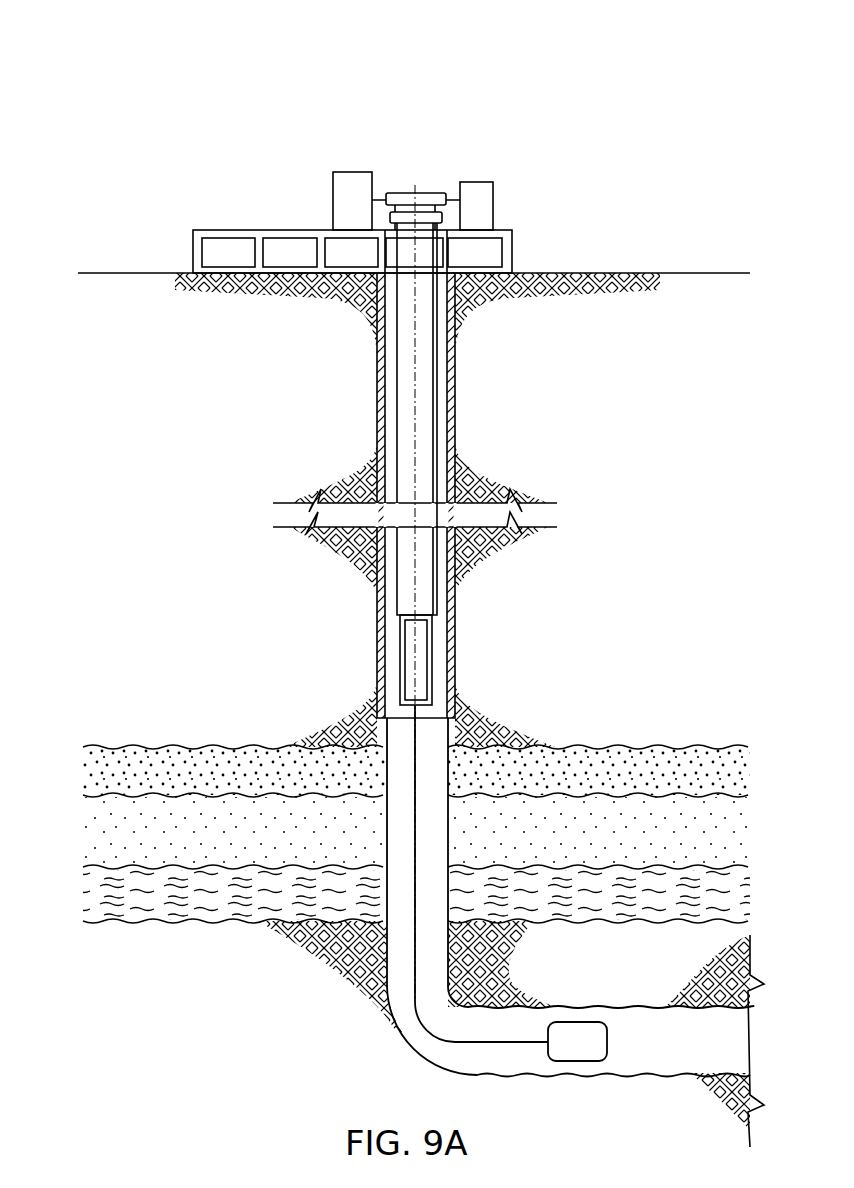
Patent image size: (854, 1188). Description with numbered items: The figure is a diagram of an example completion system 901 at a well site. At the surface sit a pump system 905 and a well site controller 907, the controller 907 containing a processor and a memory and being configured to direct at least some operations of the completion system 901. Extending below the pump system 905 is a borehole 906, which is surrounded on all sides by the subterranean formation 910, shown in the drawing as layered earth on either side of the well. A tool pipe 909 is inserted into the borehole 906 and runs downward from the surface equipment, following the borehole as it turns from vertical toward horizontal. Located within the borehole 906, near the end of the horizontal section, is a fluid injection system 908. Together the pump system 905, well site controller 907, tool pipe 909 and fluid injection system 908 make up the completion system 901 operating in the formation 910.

The completion system 901 is at (247, 92).
The pump system 905 is at (478, 192).
The borehole 906 is at (378, 641).
The well site controller 907 is at (350, 182).
The fluid injection system 908 is at (578, 1063).
The tool pipe 909 is at (420, 742).
The subterranean formation 910 is at (522, 978).